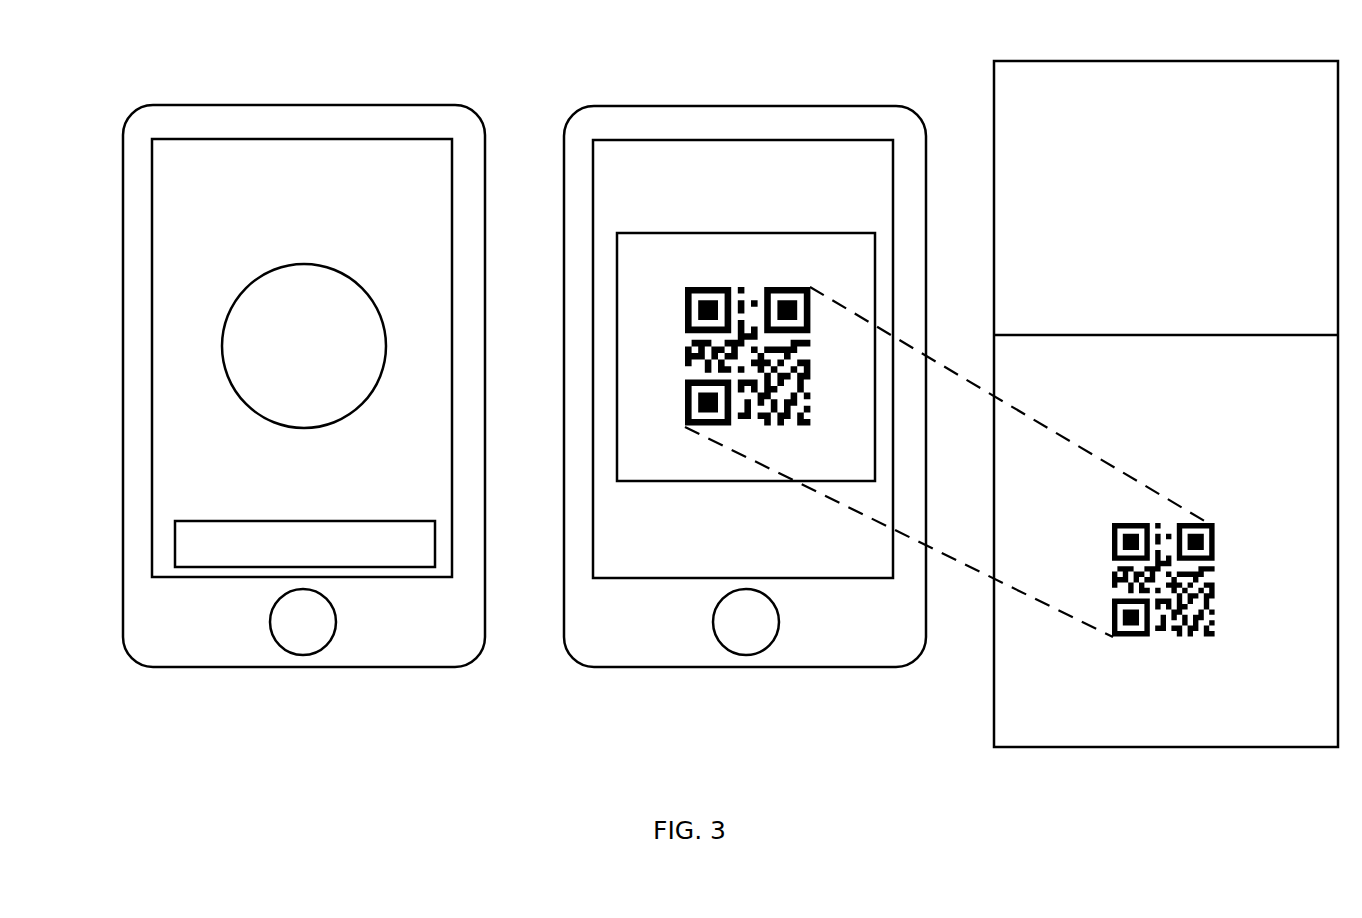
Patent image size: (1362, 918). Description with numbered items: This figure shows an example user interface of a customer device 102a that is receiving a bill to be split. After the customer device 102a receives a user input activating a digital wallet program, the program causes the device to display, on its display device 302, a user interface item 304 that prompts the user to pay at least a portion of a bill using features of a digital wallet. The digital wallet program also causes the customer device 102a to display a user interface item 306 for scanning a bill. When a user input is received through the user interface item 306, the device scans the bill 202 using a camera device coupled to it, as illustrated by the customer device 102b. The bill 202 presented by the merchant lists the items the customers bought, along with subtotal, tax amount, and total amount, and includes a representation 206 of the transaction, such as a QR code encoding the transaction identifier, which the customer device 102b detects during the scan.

The customer device 102a is at (303, 107).
The display device 302 is at (410, 140).
The user interface item 304 is at (285, 265).
The user interface item for scanning a bill 306 is at (290, 521).
The customer device 102b is at (650, 107).
The bill 202 is at (1047, 61).
The representation of the transaction 206 is at (1208, 600).